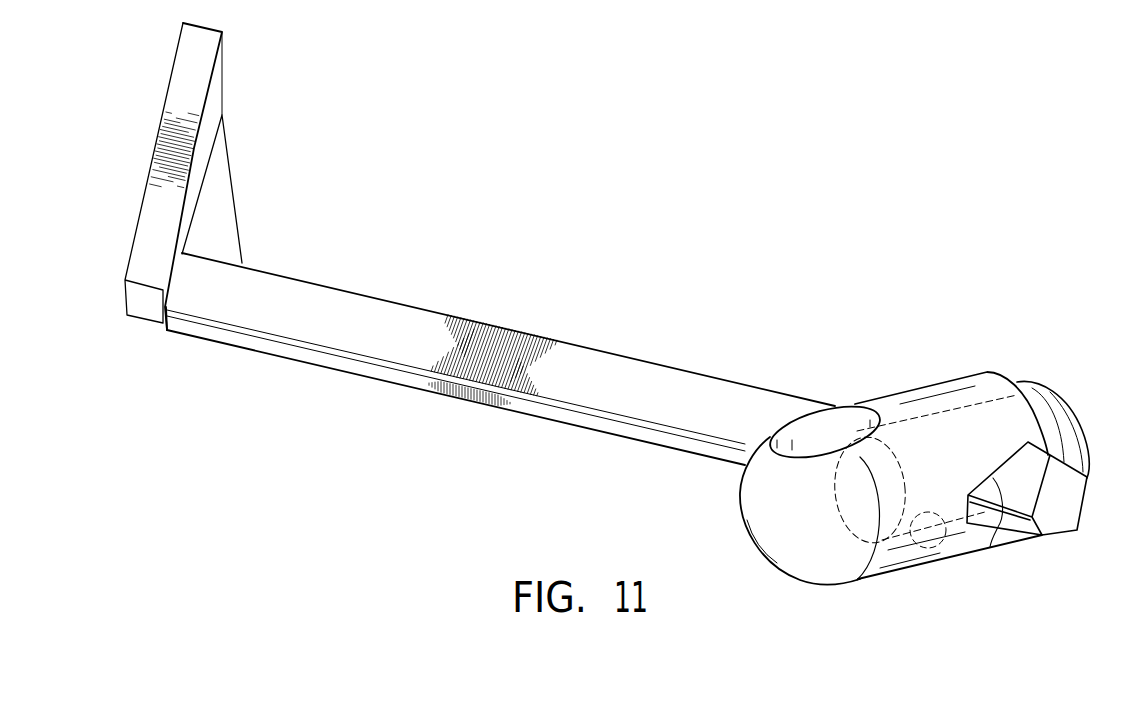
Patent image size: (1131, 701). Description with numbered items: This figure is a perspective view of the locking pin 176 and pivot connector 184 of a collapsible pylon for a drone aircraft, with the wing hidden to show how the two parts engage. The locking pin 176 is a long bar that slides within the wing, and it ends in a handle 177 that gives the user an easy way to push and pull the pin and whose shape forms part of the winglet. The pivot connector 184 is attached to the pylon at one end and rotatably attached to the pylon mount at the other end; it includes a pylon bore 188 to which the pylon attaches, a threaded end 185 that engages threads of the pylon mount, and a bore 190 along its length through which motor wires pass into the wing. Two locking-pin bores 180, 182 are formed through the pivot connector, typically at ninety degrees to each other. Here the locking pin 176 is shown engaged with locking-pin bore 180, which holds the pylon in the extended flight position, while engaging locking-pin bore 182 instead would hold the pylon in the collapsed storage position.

The locking pin 176 is at (650, 360).
The handle 177 is at (152, 215).
The locking-pin bore 180 is at (960, 378).
The locking-pin bore 182 is at (990, 547).
The pivot connector 184 is at (740, 510).
The threaded end 185 is at (1063, 390).
The pylon bore 188 is at (813, 434).
The bore 190 is at (934, 550).